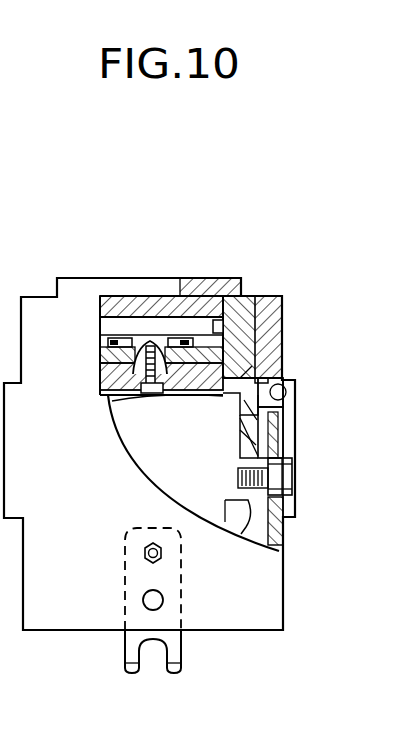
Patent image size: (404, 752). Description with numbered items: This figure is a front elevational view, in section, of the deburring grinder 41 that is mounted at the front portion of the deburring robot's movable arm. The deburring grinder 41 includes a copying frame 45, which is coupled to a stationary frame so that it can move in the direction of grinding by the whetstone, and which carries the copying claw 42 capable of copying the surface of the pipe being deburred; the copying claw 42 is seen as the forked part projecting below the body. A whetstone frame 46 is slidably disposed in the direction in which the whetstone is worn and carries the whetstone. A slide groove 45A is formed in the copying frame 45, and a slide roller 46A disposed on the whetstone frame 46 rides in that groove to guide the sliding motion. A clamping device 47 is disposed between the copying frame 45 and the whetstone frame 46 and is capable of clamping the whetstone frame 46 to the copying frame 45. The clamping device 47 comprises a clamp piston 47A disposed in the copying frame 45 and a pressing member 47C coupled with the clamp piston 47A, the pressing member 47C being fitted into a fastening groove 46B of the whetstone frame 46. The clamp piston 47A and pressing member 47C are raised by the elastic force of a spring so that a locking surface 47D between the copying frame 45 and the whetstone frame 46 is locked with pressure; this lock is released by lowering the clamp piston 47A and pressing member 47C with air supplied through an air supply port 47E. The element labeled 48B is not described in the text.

The deburring grinder 41 is at (58, 276).
The copying claw 42 is at (178, 651).
The copying frame 45 is at (265, 296).
The slide groove 45A is at (287, 392).
The whetstone frame 46 is at (153, 475).
The slide roller 46A is at (273, 412).
The fastening groove 46B is at (164, 394).
The clamping device 47 is at (196, 288).
The clamp piston 47A is at (120, 322).
The pressing member 47C is at (113, 392).
The locking surface 47D is at (256, 372).
The air supply port 47E is at (150, 302).
The seal ring 48B is at (110, 357).